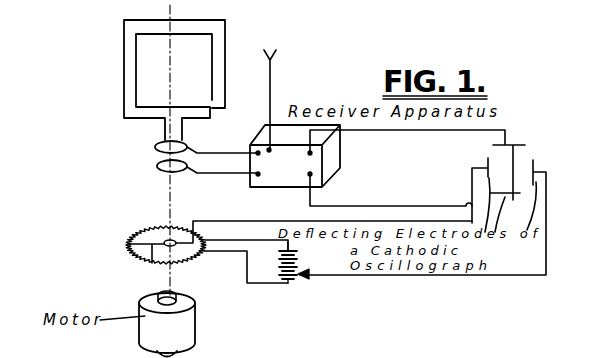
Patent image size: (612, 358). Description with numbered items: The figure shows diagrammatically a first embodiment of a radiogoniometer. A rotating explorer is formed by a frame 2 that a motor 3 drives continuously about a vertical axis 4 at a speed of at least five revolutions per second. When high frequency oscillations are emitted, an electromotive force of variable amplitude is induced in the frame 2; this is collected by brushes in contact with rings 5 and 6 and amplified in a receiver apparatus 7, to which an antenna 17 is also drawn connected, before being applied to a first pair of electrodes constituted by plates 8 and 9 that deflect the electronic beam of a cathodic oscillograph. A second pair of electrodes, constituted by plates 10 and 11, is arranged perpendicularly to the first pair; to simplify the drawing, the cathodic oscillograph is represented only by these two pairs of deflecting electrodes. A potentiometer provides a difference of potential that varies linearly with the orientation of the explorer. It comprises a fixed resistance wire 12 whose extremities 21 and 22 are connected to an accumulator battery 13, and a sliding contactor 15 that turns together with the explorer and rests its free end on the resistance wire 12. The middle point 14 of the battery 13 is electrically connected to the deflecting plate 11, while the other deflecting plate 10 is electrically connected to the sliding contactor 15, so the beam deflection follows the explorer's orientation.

The frame 2 is at (215, 40).
The motor 3 is at (185, 327).
The vertical axis 4 is at (172, 188).
The ring 5 is at (158, 147).
The ring 6 is at (158, 168).
The receiver apparatus 7 is at (275, 181).
The plate 8 is at (518, 138).
The plate 9 is at (515, 202).
The plate 10 is at (486, 163).
The plate 11 is at (540, 158).
The resistance wire 12 is at (153, 227).
The accumulator battery 13 is at (283, 272).
The middle point 14 is at (307, 269).
The sliding contactor 15 is at (152, 263).
The antenna 17 is at (272, 82).
The extremity 21 is at (209, 225).
The extremity 22 is at (203, 252).